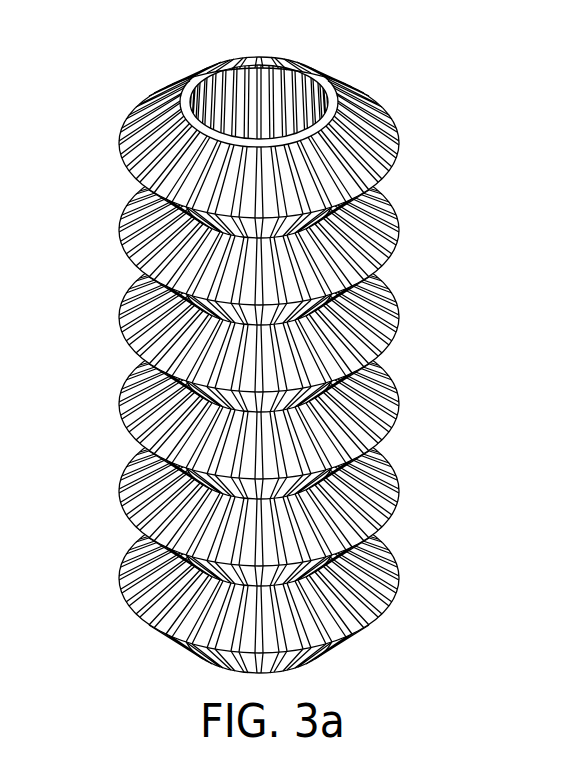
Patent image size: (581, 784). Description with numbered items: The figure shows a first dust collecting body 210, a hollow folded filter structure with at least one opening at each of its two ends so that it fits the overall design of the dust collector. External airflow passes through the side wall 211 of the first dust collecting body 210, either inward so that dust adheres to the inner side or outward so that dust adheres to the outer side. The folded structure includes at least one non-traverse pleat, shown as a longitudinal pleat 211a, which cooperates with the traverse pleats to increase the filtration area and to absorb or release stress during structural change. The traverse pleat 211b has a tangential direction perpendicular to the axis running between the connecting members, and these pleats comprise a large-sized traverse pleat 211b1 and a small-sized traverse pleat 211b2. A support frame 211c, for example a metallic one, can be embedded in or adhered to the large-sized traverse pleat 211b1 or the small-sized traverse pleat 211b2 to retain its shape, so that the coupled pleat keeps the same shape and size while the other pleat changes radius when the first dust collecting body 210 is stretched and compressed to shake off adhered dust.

The first dust collecting body 210 is at (274, 349).
The side wall 211 is at (285, 147).
The longitudinal pleat 211a is at (398, 138).
The traverse pleat 211b is at (400, 164).
The large-sized traverse pleat 211b1 is at (398, 242).
The small-sized traverse pleat 211b2 is at (332, 306).
The support frame 211c is at (121, 338).